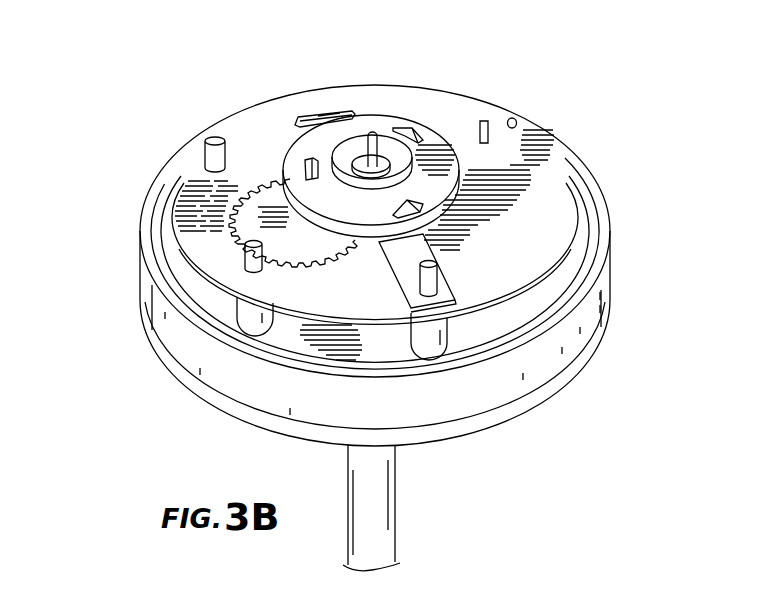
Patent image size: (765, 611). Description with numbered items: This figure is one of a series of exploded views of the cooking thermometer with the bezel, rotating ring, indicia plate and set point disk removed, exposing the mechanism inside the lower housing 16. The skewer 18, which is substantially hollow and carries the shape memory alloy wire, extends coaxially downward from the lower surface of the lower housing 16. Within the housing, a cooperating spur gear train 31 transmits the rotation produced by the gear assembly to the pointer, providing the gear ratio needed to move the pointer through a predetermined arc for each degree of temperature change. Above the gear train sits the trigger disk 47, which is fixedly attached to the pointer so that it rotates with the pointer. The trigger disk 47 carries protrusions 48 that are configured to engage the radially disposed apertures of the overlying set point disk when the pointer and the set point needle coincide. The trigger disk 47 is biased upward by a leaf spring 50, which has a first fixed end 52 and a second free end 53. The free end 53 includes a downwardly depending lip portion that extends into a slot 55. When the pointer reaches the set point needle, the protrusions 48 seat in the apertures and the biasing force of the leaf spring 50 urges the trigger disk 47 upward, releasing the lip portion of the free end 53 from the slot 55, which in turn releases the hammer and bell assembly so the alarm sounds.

The lower housing 16 is at (608, 328).
The skewer 18 is at (398, 507).
The spur gear train 31 is at (236, 213).
The trigger disk 47 is at (375, 105).
The protrusions 48 is at (306, 170).
The leaf spring 50 is at (392, 267).
The first fixed end 52 is at (432, 225).
The second free end 53 is at (318, 117).
The slot 55 is at (299, 127).